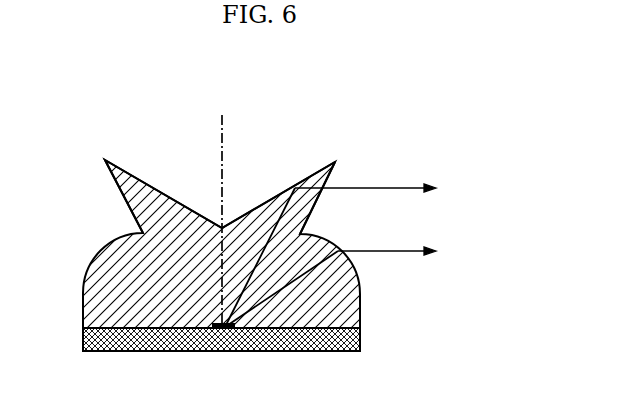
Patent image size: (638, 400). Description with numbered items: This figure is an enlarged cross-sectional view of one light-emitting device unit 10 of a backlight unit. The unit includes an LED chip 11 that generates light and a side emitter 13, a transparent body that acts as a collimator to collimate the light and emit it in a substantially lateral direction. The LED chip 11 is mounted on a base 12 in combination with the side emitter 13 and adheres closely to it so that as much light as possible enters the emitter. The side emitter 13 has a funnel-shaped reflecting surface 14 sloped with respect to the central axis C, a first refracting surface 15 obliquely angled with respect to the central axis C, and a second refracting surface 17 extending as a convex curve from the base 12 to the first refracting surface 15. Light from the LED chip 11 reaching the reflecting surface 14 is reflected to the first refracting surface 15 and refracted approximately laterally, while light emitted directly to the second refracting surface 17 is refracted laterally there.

The light-emitting device unit 10 is at (432, 123).
The LED chip 11 is at (222, 330).
The base 12 is at (358, 340).
The side emitter 13 is at (180, 228).
The reflecting surface 14 is at (268, 203).
The first refracting surface 15 is at (313, 207).
The second refracting surface 17 is at (360, 297).
The central axis C is at (223, 143).